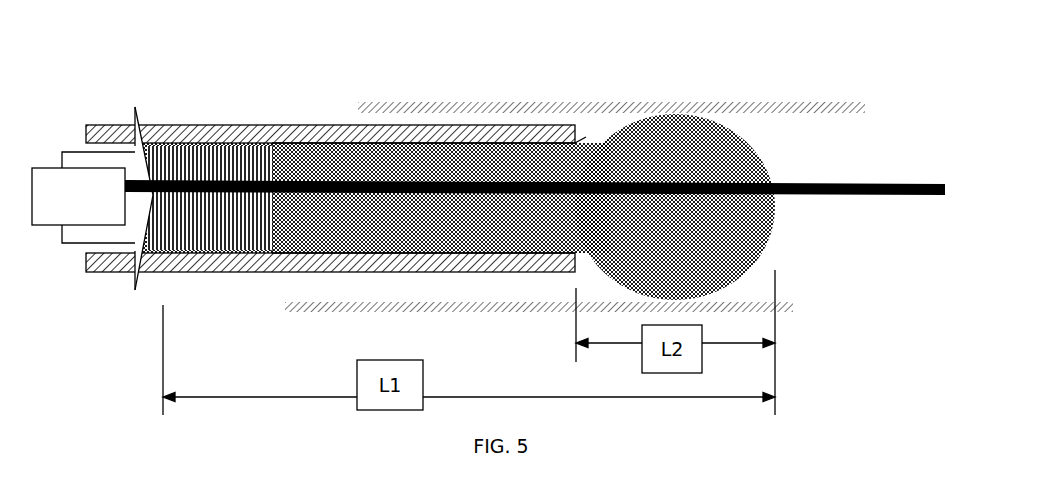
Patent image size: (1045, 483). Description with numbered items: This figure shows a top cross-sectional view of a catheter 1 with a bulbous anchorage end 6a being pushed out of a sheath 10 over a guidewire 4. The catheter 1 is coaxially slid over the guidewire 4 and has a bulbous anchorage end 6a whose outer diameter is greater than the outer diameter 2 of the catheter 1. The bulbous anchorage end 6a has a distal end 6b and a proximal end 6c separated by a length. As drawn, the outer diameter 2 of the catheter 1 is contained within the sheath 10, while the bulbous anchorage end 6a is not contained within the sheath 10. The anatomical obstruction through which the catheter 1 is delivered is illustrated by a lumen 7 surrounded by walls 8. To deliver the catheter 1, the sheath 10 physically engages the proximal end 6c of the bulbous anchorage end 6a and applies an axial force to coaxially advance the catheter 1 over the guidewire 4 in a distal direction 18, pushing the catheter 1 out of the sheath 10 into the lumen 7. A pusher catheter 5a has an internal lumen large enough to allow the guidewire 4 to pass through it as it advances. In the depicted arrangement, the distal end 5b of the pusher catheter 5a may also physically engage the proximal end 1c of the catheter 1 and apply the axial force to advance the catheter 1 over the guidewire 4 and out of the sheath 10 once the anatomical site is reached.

The catheter 1 is at (631, 112).
The proximal end of the catheter 1c is at (275, 251).
The outer diameter of the catheter 2 is at (566, 281).
The guidewire 4 is at (831, 171).
The pusher catheter 5a is at (213, 132).
The distal end of the pusher catheter 5b is at (275, 170).
The bulbous anchorage end 6a is at (675, 99).
The distal end of the bulbous anchorage end 6b is at (762, 136).
The proximal end of the bulbous anchorage end 6c is at (580, 129).
The lumen 7 is at (818, 241).
The walls 8 is at (478, 292).
The sheath 10 is at (504, 241).
The distal direction 18 is at (76, 244).